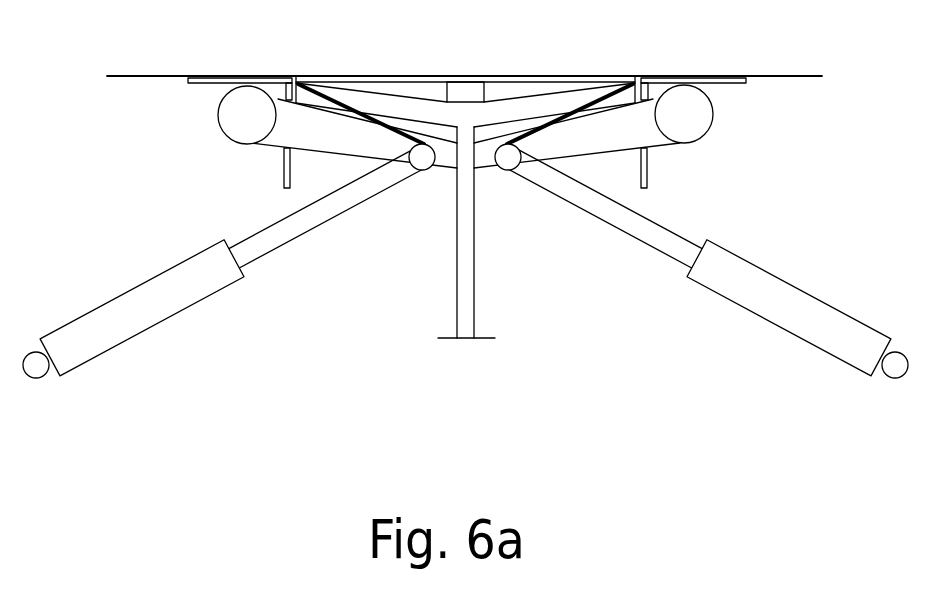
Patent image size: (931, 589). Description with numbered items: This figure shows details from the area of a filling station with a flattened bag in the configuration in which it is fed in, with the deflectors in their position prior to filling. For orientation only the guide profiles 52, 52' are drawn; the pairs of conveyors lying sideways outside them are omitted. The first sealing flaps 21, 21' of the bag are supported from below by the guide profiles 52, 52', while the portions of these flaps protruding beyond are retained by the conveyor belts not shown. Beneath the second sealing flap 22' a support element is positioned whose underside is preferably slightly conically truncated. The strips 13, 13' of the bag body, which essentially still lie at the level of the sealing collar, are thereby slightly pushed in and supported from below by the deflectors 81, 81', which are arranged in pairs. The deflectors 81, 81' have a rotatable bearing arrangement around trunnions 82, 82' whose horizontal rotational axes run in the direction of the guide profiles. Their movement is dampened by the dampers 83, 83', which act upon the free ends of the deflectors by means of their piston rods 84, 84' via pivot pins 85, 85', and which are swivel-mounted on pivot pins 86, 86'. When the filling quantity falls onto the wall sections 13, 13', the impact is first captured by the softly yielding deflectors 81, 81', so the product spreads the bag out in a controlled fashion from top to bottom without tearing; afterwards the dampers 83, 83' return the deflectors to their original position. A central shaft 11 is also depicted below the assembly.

The first sealing flap 21 is at (238, 39).
The first sealing flap 21' is at (644, 38).
The strip of the bag body 13 is at (347, 72).
The strip of the bag body 13' is at (554, 77).
The second sealing flap 22' is at (465, 51).
The guide profile 52 is at (191, 133).
The guide profile 52' is at (675, 50).
The trunnion 82 is at (198, 163).
The trunnion 82' is at (735, 132).
The deflector 81 is at (354, 200).
The deflector 81' is at (577, 211).
The pivot pin 85 is at (408, 231).
The pivot pin 85' is at (523, 209).
The piston rod 84 is at (328, 261).
The piston rod 84' is at (603, 270).
The damper 83 is at (142, 332).
The damper 83' is at (789, 344).
The pivot pin 86 is at (47, 409).
The pivot pin 86' is at (860, 413).
The central shaft 11 is at (466, 343).